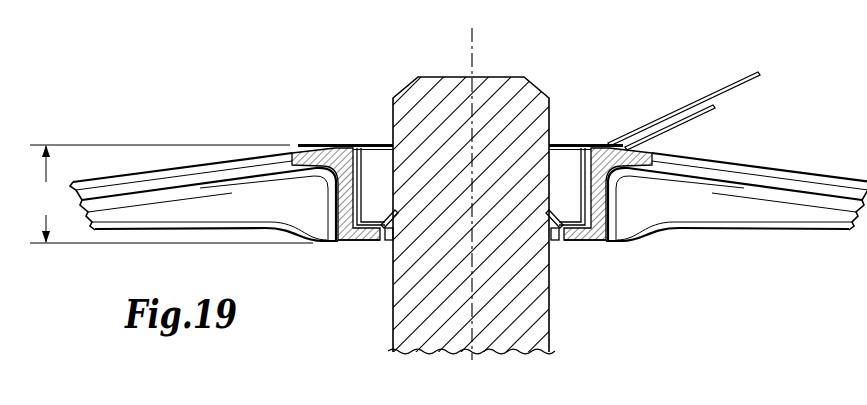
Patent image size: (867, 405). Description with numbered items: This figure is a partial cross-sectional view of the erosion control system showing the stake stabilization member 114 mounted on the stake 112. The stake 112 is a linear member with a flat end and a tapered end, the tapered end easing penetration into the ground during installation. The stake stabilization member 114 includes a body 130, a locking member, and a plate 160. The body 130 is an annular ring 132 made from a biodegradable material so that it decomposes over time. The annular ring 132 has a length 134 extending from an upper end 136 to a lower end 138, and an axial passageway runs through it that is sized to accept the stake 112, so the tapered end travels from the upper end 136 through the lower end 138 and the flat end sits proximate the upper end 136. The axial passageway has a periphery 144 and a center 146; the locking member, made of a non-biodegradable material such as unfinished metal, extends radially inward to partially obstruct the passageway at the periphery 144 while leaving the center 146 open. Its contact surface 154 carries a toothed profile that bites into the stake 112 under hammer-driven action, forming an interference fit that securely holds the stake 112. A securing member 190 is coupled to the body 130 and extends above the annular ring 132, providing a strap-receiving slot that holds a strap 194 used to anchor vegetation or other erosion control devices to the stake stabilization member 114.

The stake 112 is at (550, 313).
The stake stabilization member 114 is at (174, 165).
The body 130 is at (648, 146).
The annular ring 132 is at (365, 243).
The length 134 is at (171, 194).
The upper end 136 is at (352, 148).
The lower end 138 is at (347, 243).
The periphery 144 is at (384, 243).
The center 146 is at (470, 46).
The contact surface 154 is at (560, 245).
The plate 160 is at (748, 226).
The securing member 190 is at (596, 145).
The strap 194 is at (733, 83).